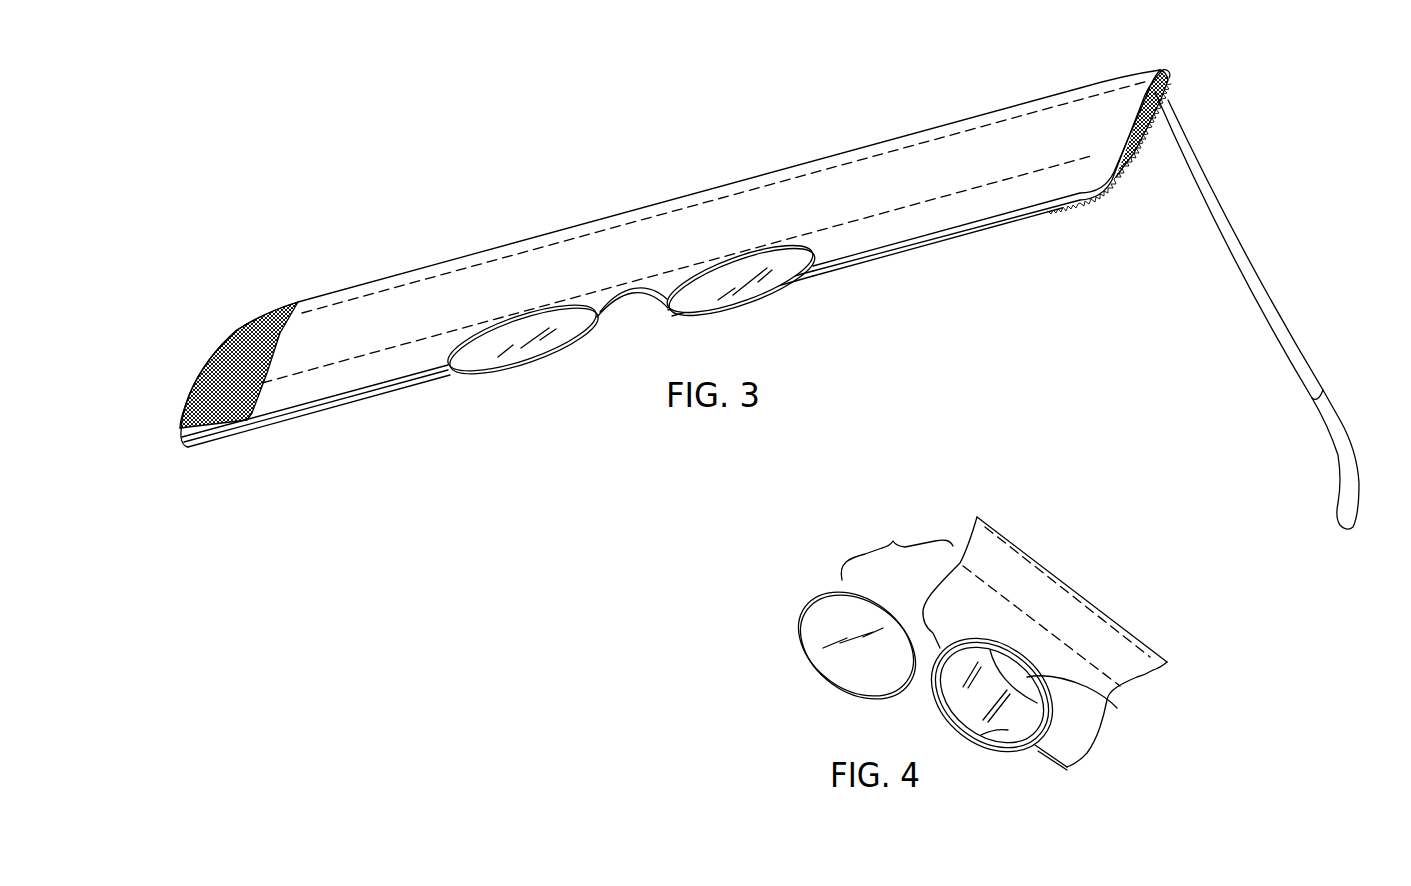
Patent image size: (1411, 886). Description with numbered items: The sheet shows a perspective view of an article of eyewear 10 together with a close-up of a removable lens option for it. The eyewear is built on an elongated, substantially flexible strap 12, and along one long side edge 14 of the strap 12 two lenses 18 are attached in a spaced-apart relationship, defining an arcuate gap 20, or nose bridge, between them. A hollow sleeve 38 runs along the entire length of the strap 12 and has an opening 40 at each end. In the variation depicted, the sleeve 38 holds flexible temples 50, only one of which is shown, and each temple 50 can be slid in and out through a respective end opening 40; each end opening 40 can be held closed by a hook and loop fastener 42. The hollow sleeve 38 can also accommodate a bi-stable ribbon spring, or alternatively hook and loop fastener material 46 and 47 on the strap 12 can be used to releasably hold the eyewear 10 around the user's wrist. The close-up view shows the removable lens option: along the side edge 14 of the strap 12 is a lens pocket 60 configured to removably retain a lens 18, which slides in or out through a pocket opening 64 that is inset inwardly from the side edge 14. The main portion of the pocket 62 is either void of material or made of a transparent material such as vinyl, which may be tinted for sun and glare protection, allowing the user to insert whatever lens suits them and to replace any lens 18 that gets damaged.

In FIG. 3, the article of eyewear 10 is at (373, 237).
In FIG. 3, the strap 12 is at (335, 383).
In FIG. 4, the strap 12 is at (1102, 613).
In FIG. 3, the side edge 14 is at (852, 263).
In FIG. 4, the side edge 14 is at (1047, 757).
In FIG. 3, the lens 18 is at (505, 372).
In FIG. 4, the lens 18 is at (803, 643).
In FIG. 3, the arcuate gap 20 is at (647, 292).
In FIG. 3, the hollow sleeve 38 is at (1050, 120).
In FIG. 3, the end opening 40 is at (188, 393).
In FIG. 3, the hook and loop fastener 42 is at (1145, 148).
In FIG. 3, the hook and loop fastener material 46 is at (262, 305).
In FIG. 3, the hook and loop fastener material 47 is at (1090, 208).
In FIG. 3, the flexible temple 50 is at (1220, 197).
In FIG. 4, the lens pocket 60 is at (936, 713).
In FIG. 4, the main portion of the pocket 62 is at (980, 735).
In FIG. 4, the pocket opening 64 is at (1117, 710).